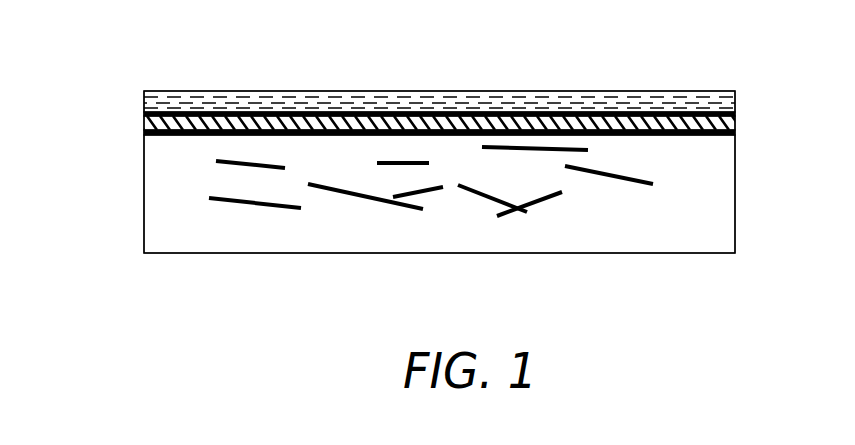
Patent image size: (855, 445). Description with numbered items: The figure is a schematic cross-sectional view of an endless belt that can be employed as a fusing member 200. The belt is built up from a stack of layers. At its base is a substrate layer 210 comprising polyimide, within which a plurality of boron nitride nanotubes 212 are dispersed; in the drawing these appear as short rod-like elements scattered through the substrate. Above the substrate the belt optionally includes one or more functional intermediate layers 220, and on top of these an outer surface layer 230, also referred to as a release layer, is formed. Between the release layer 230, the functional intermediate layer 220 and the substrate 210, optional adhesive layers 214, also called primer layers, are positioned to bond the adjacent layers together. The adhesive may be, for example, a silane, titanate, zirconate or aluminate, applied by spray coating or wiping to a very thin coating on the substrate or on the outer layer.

The fusing member 200 is at (266, 60).
The substrate layer 210 is at (735, 200).
The boron nitride nanotubes 212 is at (547, 151).
The adhesive layer 214 is at (144, 132).
The functional intermediate layer 220 is at (735, 122).
The outer surface layer 230 is at (455, 91).